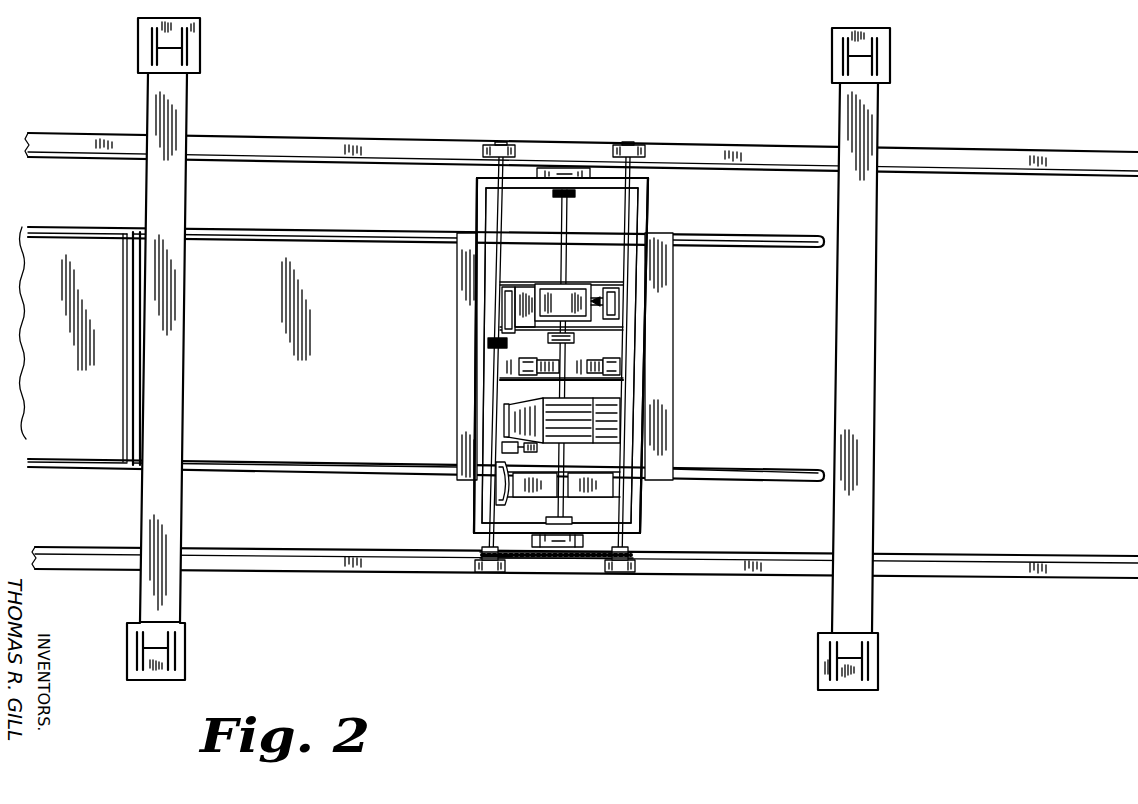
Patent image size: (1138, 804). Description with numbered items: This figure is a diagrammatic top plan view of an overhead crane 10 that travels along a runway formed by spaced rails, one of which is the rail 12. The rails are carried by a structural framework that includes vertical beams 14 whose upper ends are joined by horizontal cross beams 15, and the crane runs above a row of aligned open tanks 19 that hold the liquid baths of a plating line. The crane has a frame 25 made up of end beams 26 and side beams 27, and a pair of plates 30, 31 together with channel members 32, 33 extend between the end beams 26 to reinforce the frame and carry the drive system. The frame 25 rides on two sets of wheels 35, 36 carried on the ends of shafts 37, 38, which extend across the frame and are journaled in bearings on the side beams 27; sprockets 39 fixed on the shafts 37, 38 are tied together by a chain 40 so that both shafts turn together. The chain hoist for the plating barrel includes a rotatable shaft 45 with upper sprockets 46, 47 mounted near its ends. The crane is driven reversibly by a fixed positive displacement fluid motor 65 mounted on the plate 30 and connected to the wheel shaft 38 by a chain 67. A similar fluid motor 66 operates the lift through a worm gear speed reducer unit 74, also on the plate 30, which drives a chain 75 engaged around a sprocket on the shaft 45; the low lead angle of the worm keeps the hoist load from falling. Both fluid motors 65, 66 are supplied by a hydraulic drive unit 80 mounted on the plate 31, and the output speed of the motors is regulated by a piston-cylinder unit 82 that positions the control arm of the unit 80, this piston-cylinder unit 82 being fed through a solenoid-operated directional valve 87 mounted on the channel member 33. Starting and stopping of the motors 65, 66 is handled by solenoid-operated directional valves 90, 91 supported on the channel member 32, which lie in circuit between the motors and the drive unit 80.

The overhead crane 10 is at (448, 209).
The rail 12 is at (735, 573).
The vertical beam 14 is at (192, 42).
The horizontal cross beam 15 is at (173, 337).
The open tank 19 is at (258, 470).
The frame 25 is at (646, 182).
The end beam 26 is at (480, 181).
The side beam 27 is at (488, 202).
The plate 30 is at (543, 258).
The plate 31 is at (508, 400).
The channel member 32 is at (508, 346).
The channel member 33 is at (607, 475).
The wheel 35 is at (628, 145).
The wheel 36 is at (520, 113).
The shaft 37 is at (628, 237).
The shaft 38 is at (502, 235).
The sprocket 39 is at (482, 550).
The chain 40 is at (583, 558).
The rotatable shaft 45 is at (567, 237).
The upper sprocket 46 is at (573, 198).
The upper sprocket 47 is at (548, 522).
The crane fluid motor 65 is at (505, 310).
The lift fluid motor 66 is at (620, 301).
The chain 67 is at (505, 366).
The worm gear speed reducer unit 74 is at (575, 297).
The chain 75 is at (574, 338).
The hydraulic drive unit 80 is at (580, 412).
The piston-cylinder unit 82 is at (503, 448).
The directional valve 87 is at (497, 485).
The directional valve 90 is at (507, 380).
The directional valve 91 is at (622, 366).